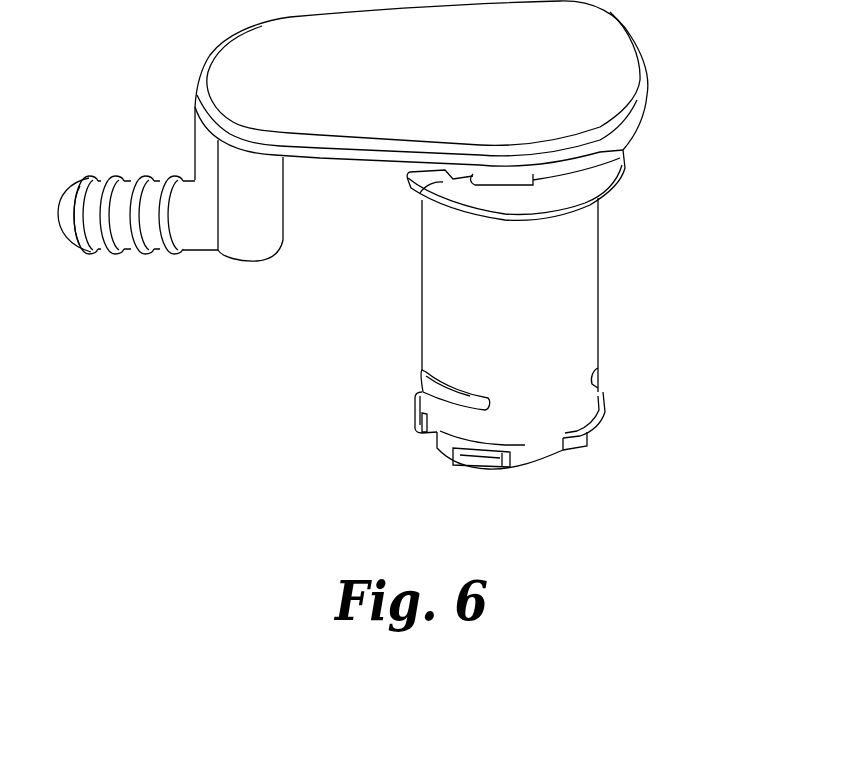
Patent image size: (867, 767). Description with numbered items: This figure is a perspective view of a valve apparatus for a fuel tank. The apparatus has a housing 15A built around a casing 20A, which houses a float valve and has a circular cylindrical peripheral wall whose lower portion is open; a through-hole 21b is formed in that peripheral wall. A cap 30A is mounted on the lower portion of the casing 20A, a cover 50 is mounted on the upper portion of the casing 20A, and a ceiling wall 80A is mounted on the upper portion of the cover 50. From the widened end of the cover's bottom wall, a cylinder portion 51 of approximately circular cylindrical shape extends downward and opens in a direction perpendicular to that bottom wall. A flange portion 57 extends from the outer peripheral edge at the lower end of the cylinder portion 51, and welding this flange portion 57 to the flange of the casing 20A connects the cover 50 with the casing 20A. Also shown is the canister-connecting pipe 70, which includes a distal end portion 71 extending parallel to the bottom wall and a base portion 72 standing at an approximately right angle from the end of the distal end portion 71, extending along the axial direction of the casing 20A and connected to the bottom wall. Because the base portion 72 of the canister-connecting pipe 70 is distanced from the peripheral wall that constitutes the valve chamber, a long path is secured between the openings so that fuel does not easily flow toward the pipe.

The ceiling wall 80A is at (613, 62).
The cover 50 is at (540, 220).
The flange portion 57 is at (420, 193).
The cylinder portion 51 is at (468, 174).
The housing 15A is at (737, 50).
The casing 20A is at (603, 299).
The cap 30A is at (541, 419).
The through-hole 21b is at (447, 395).
The canister-connecting pipe 70 is at (170, 246).
The distal end portion 71 is at (138, 260).
The base portion 72 is at (253, 243).